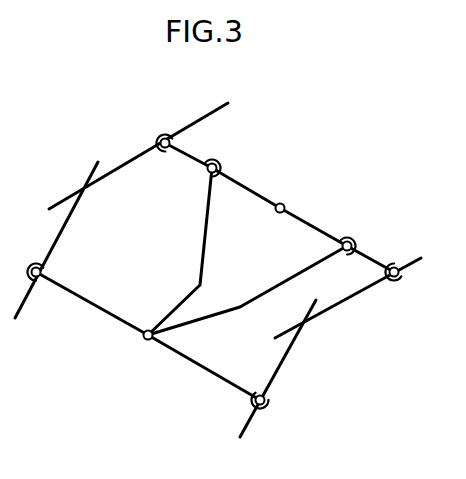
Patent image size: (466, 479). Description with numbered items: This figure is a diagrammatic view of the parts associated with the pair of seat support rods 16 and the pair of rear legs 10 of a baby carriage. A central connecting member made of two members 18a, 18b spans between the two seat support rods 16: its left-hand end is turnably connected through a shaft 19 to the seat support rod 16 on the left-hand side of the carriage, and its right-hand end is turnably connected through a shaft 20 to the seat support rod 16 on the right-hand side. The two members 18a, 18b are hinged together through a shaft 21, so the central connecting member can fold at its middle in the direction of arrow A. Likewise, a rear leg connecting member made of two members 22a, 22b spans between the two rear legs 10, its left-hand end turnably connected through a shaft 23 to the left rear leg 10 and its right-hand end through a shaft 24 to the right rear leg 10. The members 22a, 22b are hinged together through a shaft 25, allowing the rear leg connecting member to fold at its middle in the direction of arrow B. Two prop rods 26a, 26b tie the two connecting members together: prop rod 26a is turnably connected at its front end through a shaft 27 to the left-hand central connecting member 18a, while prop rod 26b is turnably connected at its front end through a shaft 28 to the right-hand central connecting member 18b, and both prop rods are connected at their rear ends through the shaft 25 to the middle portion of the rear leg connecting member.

The rear leg 10 is at (62, 240).
The seat support rod 16 is at (137, 157).
The left-hand central connecting member 18a is at (227, 175).
The right-hand central connecting member 18b is at (337, 235).
The shaft 19 is at (161, 147).
The shaft 20 is at (395, 264).
The shaft 21 is at (274, 210).
The rear leg connecting member (first member) 22a is at (93, 308).
The rear leg connecting member (second member) 22b is at (208, 373).
The shaft 23 is at (38, 278).
The shaft 24 is at (253, 392).
The shaft 25 is at (143, 340).
The prop rod 26a is at (198, 272).
The prop rod 26b is at (267, 293).
The shaft 27 is at (207, 170).
The shaft 28 is at (346, 253).
The arrow A is at (329, 177).
The arrow B is at (160, 355).